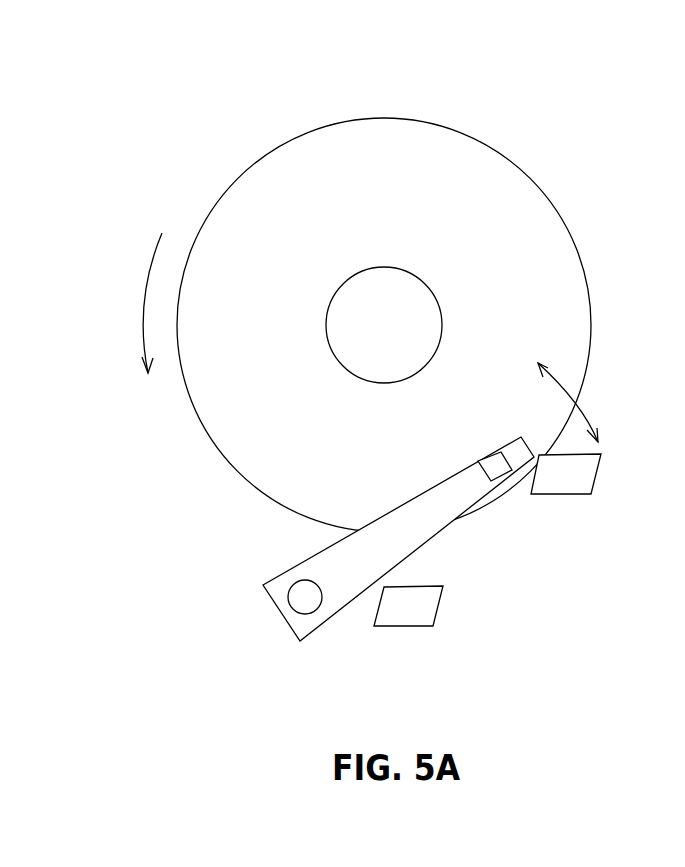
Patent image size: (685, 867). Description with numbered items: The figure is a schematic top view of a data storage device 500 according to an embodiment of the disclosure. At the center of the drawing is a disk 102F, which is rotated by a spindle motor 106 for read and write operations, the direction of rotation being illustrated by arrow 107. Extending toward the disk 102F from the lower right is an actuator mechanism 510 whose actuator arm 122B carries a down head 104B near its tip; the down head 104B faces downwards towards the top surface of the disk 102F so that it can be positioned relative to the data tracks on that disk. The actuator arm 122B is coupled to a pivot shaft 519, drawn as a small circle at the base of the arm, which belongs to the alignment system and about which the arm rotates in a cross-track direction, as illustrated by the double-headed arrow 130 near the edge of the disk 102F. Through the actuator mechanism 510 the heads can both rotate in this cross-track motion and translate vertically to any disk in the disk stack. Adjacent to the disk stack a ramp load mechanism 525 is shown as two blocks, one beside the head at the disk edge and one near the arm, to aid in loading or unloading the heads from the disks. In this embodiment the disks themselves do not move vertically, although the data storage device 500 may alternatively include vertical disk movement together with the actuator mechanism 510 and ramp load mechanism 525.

The data storage device 500 is at (365, 372).
The spindle motor 106 is at (392, 287).
The disk 102F is at (493, 173).
The arrow indicating disk rotation 107 is at (142, 297).
The arrow indicating cross-track rotation 130 is at (587, 418).
The down head 104B is at (521, 455).
The ramp load mechanism 525 is at (585, 483).
The actuator arm 122B is at (443, 523).
The pivot shaft 519 is at (300, 599).
The actuator mechanism 510 is at (401, 572).